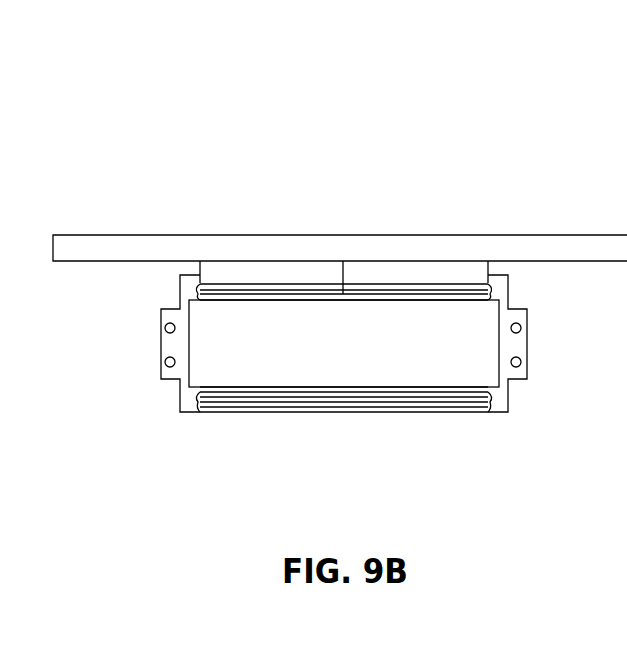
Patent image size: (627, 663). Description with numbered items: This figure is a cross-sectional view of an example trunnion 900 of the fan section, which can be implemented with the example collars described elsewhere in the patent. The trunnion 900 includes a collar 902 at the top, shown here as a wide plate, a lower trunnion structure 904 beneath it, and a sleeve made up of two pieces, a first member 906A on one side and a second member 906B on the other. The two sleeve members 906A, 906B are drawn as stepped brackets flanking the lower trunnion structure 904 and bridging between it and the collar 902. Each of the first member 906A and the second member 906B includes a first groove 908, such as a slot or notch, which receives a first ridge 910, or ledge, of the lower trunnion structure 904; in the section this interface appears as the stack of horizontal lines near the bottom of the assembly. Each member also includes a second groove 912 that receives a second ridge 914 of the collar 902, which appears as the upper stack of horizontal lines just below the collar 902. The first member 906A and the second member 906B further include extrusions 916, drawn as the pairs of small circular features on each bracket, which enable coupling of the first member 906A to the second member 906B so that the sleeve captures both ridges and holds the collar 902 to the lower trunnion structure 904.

The trunnion 900 is at (222, 108).
The collar 902 is at (98, 235).
The lower trunnion structure 904 is at (322, 370).
The first member 906A is at (512, 378).
The second member 906B is at (163, 378).
The first groove 908 is at (192, 412).
The first ridge 910 is at (275, 405).
The second groove 912 is at (194, 287).
The second ridge 914 is at (302, 288).
The extrusions 916 is at (168, 343).